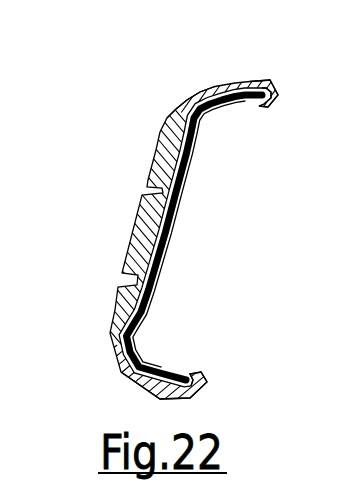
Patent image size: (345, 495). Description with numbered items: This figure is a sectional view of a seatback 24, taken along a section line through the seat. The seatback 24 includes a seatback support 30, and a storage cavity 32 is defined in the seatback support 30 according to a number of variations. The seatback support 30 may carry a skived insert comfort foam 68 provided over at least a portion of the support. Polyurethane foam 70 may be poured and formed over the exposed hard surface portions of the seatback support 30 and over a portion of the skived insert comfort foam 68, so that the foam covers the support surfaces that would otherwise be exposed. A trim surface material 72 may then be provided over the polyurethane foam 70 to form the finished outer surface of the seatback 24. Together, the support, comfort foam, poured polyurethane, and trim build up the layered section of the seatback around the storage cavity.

The seatback 24 is at (126, 231).
The seatback support 30 is at (145, 362).
The storage cavity 32 is at (180, 232).
The skived insert comfort foam 68 is at (168, 172).
The polyurethane foam 70 is at (220, 87).
The trim surface material 72 is at (190, 100).